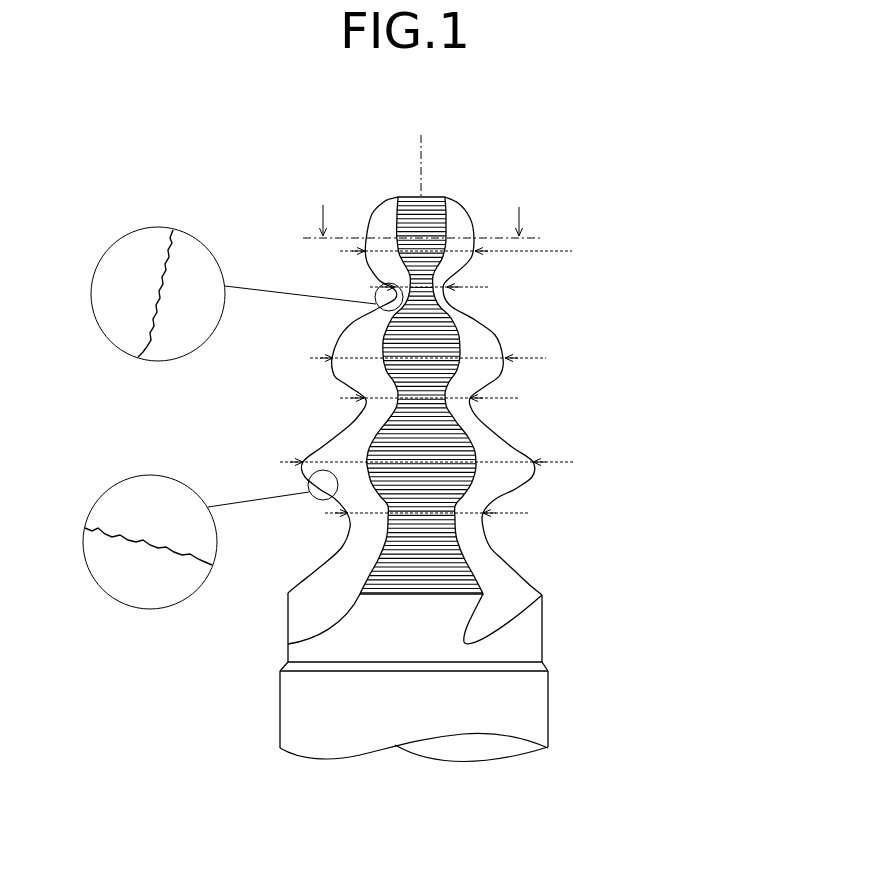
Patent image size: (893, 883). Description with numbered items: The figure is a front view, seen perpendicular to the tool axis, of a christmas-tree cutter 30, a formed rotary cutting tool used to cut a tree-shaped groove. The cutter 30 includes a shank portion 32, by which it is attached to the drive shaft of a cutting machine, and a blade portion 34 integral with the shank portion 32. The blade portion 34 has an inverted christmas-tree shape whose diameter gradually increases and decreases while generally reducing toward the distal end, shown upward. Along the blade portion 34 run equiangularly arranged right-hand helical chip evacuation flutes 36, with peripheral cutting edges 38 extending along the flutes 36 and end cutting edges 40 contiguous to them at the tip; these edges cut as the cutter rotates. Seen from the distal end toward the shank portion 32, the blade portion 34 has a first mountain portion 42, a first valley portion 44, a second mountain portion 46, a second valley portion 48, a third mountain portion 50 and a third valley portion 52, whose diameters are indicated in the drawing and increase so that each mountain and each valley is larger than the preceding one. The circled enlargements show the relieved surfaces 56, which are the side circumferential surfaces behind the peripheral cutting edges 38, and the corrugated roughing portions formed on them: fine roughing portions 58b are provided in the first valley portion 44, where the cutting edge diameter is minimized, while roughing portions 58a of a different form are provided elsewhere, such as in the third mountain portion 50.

The christmas-tree cutter 30 is at (315, 124).
The shank portion 32 is at (290, 711).
The blade portion 34 is at (463, 194).
The chip evacuation flutes 36 is at (342, 576).
The peripheral cutting edges 38 is at (347, 330).
The end cutting edges 40 is at (412, 195).
The first mountain portion 42 is at (358, 258).
The first valley portion 44 is at (457, 303).
The second mountain portion 46 is at (505, 352).
The second valley portion 48 is at (478, 408).
The third mountain portion 50 is at (298, 454).
The third valley portion 52 is at (347, 512).
The relieved surfaces 56 is at (172, 246).
The roughing portions of first form 58a is at (100, 542).
The roughing portions of second form 58b is at (137, 330).